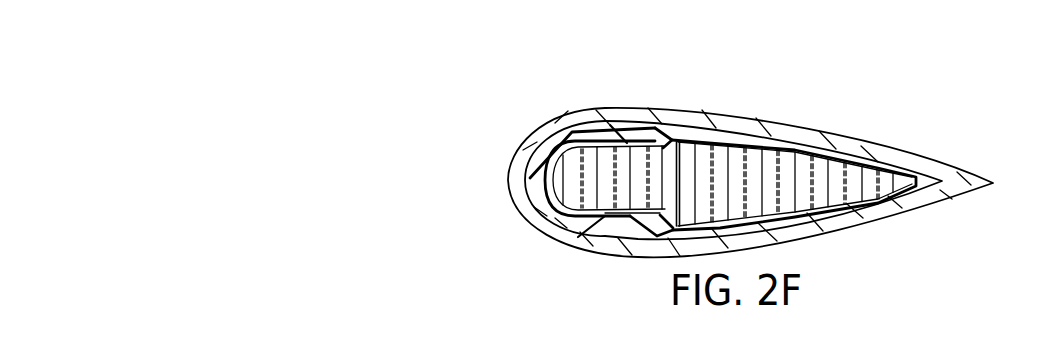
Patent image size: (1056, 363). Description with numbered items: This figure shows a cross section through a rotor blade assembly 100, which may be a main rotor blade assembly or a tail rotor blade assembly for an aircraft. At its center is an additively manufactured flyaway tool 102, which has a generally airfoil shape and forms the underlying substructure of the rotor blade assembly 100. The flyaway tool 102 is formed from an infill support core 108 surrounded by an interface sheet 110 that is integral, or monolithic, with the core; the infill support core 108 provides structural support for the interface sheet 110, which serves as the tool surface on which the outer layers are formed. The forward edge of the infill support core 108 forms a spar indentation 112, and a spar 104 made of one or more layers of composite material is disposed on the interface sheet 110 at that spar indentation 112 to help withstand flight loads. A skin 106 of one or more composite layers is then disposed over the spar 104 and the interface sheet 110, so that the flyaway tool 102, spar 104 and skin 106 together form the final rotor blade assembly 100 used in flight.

The rotor blade assembly 100 is at (872, 105).
The additively manufactured flyaway tool 102 is at (768, 170).
The spar 104 is at (588, 140).
The skin 106 is at (633, 107).
The infill support core 108 is at (730, 146).
The interface sheet 110 is at (681, 137).
The spar indentation 112 is at (530, 178).